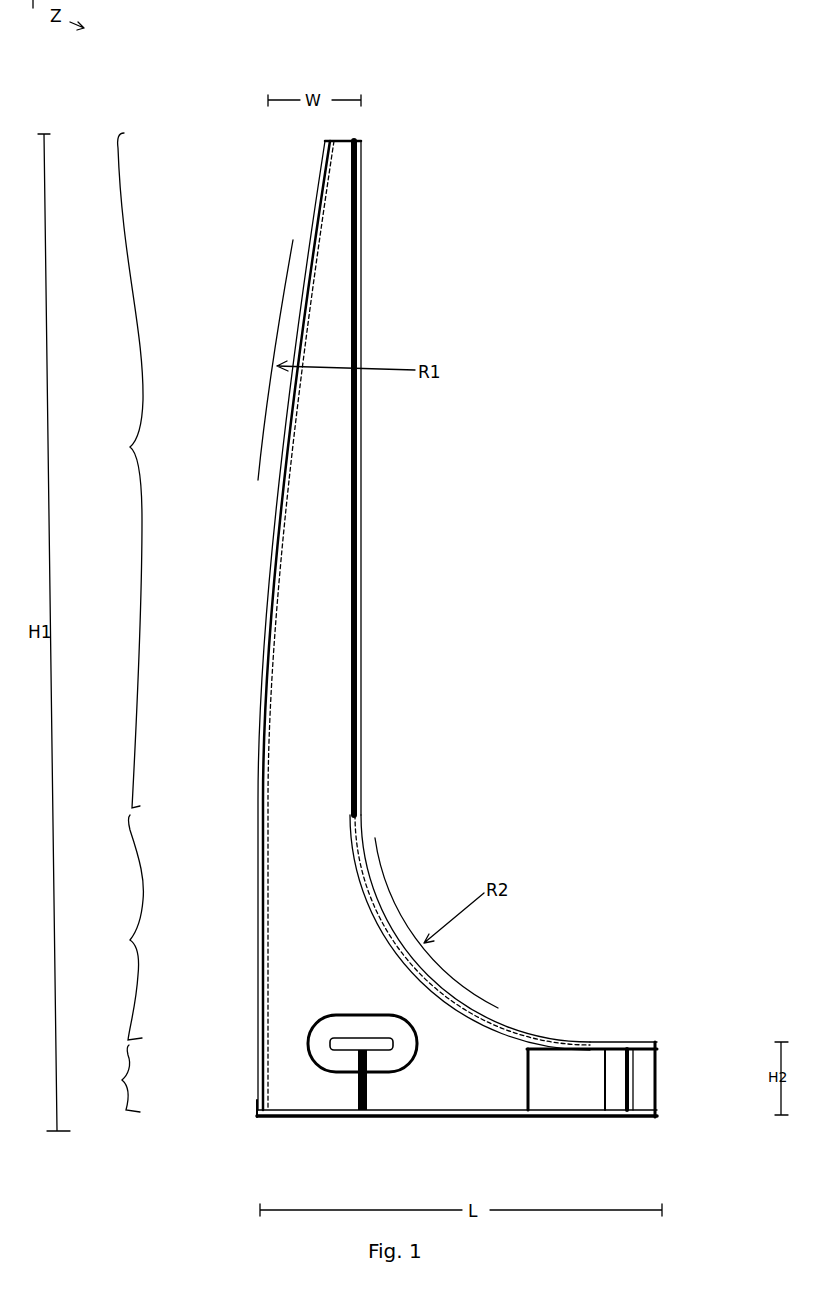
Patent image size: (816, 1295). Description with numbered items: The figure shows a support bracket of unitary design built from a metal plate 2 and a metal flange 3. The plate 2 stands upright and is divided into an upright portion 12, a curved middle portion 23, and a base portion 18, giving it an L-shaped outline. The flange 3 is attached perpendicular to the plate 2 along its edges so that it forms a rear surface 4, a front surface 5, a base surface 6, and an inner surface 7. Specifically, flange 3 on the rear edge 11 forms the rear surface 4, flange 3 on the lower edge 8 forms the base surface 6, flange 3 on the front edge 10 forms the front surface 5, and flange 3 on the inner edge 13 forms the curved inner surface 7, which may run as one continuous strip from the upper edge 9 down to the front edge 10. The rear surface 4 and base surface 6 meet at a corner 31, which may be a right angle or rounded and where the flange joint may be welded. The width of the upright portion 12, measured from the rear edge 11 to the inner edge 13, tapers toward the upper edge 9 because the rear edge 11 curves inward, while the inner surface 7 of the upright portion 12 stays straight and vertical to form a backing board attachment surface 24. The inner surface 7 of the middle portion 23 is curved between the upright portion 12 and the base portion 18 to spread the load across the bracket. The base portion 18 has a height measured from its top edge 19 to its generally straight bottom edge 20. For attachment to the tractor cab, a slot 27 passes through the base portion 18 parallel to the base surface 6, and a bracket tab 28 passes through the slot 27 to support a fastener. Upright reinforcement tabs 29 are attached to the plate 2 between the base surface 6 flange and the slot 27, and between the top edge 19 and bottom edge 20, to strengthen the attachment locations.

The metal plate 2 is at (400, 614).
The metal flange 3 is at (381, 478).
The rear surface 4 is at (272, 625).
The front surface 5 is at (609, 1080).
The base surface 6 is at (444, 1125).
The inner surface 7 is at (362, 700).
The lower edge 8 is at (292, 1100).
The upper edge 9 is at (338, 150).
The front edge 10 is at (645, 1060).
The rear edge 11 is at (278, 806).
The upright portion 12 is at (116, 470).
The inner edge 13 is at (340, 807).
The base portion 18 is at (112, 1078).
The top edge of the base portion 19 is at (640, 1042).
The bottom edge of the base portion 20 is at (638, 1113).
The middle portion 23 is at (120, 927).
The backing board attachment surface 24 is at (381, 478).
The slot 27 is at (340, 1052).
The bracket tab 28 is at (306, 1083).
The reinforcement tab 29 is at (373, 1117).
The corner 31 is at (260, 1115).